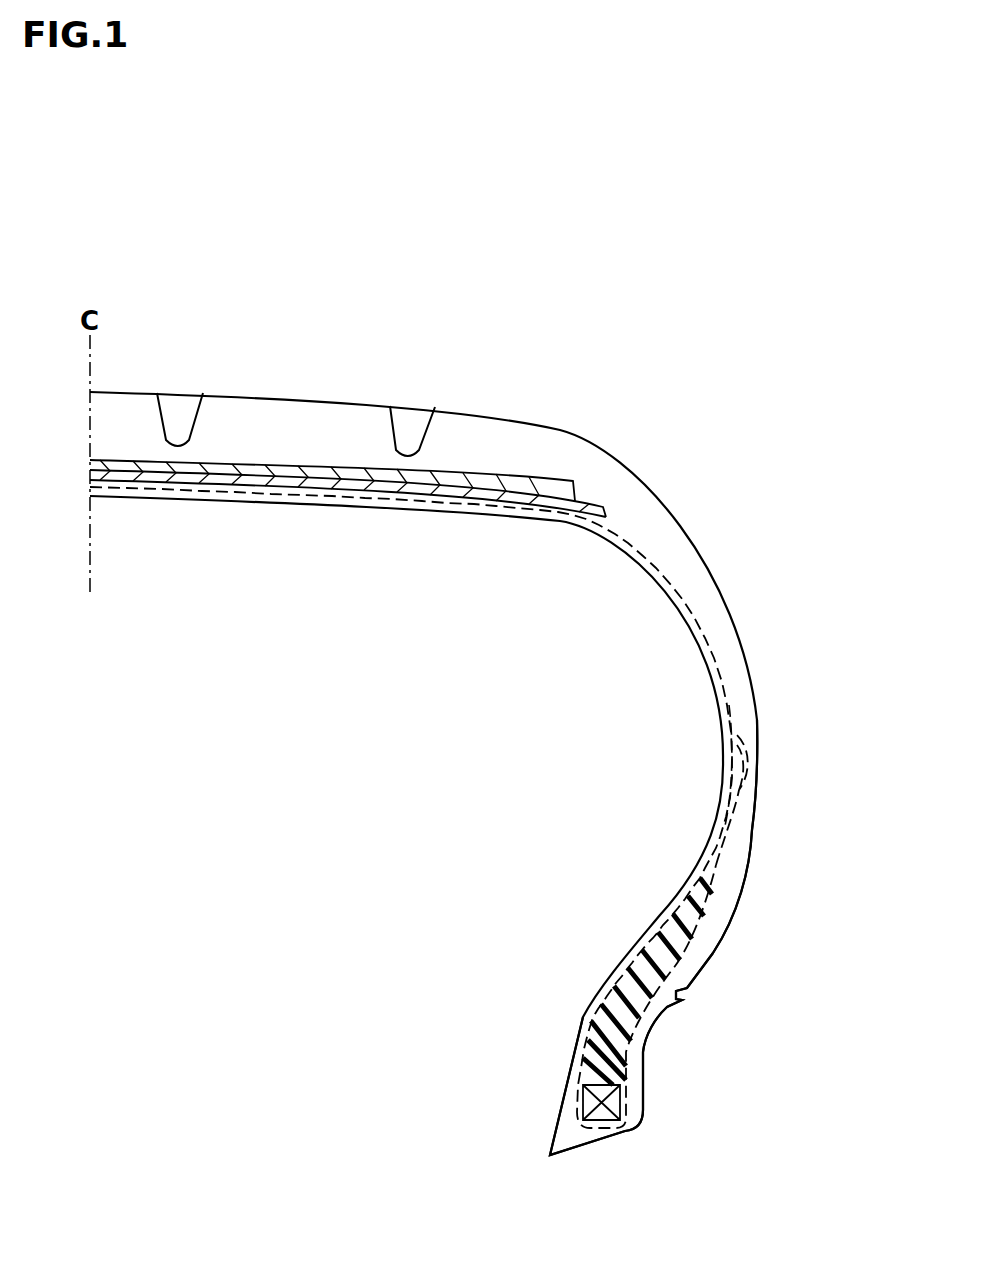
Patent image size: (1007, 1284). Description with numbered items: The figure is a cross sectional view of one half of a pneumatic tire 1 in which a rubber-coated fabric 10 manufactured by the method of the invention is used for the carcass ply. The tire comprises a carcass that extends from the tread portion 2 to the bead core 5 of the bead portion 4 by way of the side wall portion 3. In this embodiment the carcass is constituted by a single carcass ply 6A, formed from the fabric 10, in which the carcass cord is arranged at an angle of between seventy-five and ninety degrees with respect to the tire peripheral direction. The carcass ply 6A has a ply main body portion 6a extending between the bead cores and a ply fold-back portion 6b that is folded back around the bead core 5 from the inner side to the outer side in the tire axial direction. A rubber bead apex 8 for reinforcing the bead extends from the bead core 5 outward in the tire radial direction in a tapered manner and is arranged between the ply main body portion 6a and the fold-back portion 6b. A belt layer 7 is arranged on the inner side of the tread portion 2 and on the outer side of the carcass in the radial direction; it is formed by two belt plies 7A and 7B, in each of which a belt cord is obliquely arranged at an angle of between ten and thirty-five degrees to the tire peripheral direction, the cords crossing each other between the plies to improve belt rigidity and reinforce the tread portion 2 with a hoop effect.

The pneumatic tire 1 is at (585, 413).
The tread portion 2 is at (258, 392).
The side wall portion 3 is at (760, 683).
The bead portion 4 is at (562, 1020).
The bead core 5 is at (587, 1103).
The carcass ply 6A is at (548, 688).
The ply main body portion 6a is at (727, 703).
The ply fold-back portion 6b is at (732, 740).
The belt layer 7 is at (306, 633).
The belt ply 7A is at (312, 481).
The belt ply 7B is at (217, 467).
The bead apex 8 is at (628, 983).
The fabric coated with rubber 10 is at (688, 587).